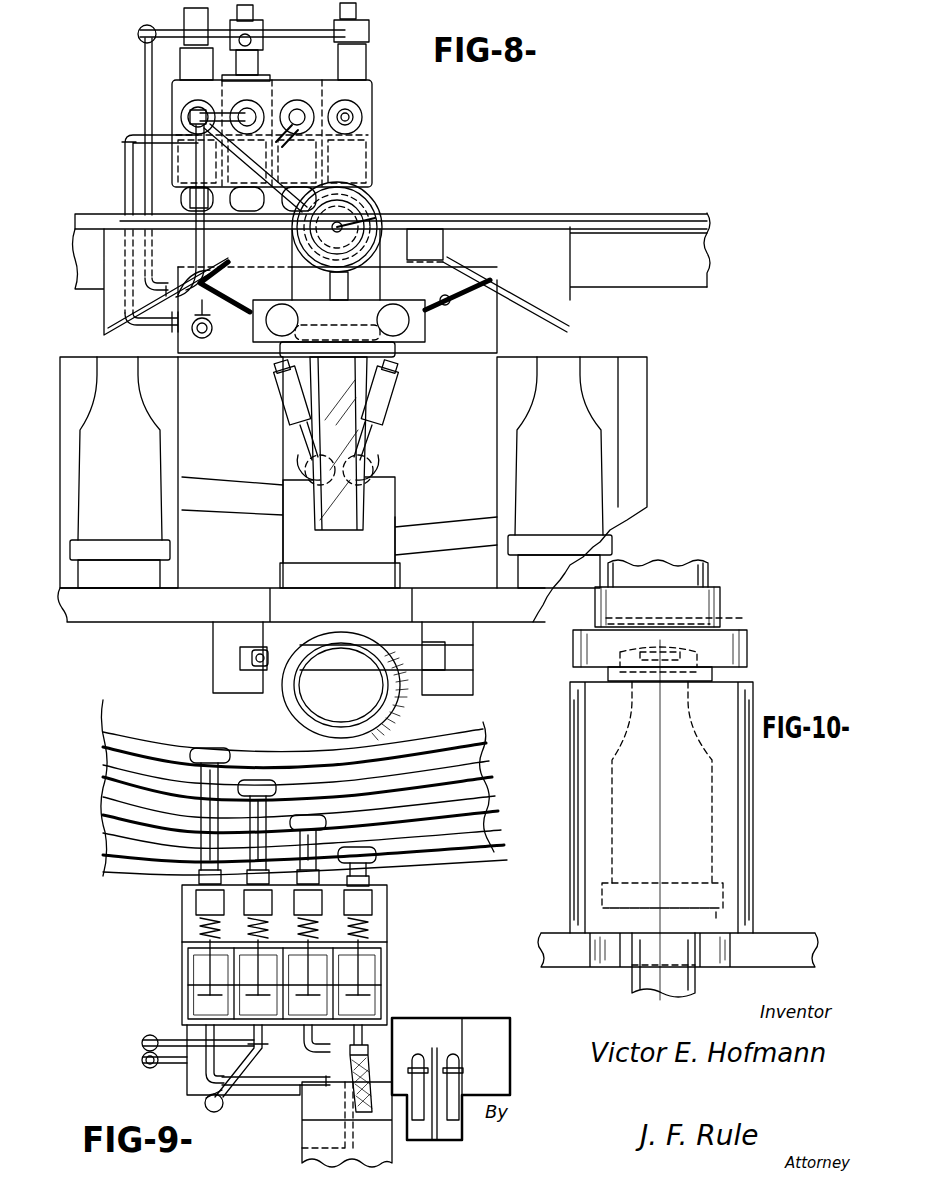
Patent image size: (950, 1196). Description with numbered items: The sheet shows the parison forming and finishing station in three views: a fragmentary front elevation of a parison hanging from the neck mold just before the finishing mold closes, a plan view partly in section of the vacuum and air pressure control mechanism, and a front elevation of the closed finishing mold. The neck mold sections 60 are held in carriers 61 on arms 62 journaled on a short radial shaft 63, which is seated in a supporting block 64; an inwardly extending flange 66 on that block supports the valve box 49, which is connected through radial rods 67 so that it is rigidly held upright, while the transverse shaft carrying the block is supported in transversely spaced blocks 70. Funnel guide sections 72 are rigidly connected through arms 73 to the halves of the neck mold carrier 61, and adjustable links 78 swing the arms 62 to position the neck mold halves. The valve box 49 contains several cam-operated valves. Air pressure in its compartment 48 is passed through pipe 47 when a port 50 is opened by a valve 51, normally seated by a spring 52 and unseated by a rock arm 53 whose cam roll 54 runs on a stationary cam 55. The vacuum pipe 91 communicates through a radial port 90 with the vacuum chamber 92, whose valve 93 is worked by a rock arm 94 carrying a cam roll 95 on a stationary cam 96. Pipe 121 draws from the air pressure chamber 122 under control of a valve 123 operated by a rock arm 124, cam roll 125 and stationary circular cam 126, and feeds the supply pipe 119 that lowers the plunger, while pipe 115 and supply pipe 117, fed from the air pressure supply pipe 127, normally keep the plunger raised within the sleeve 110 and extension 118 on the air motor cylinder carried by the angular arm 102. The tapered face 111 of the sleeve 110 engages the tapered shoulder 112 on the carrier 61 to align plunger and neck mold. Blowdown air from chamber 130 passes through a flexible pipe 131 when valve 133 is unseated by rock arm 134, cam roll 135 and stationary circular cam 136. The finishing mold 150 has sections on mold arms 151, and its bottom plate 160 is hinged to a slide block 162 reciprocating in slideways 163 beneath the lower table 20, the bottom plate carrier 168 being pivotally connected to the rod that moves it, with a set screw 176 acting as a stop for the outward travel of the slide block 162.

In FIG. 8, the lower table 20 is at (130, 624).
In FIG. 10, the lower table 20 is at (790, 935).
In FIG. 8, the pipe 47 is at (214, 172).
In FIG. 9, the pipe 47 is at (222, 1108).
In FIG. 9, the air pressure compartment 48 is at (227, 1053).
In FIG. 8, the valve box 49 is at (374, 131).
In FIG. 9, the valve box 49 is at (396, 950).
In FIG. 9, the port 50 is at (284, 967).
In FIG. 9, the valve 51 is at (252, 993).
In FIG. 9, the spring 52 is at (300, 936).
In FIG. 9, the rock arm 53 is at (252, 845).
In FIG. 9, the cam roll 54 is at (263, 778).
In FIG. 9, the stationary cam 55 is at (292, 783).
In FIG. 10, the neck mold sections 60 is at (714, 675).
In FIG. 8, the neck mold carrier 61 is at (256, 336).
In FIG. 10, the neck mold carrier 61 is at (748, 650).
In FIG. 8, the arms 62 is at (290, 283).
In FIG. 8, the radial shaft 63 is at (382, 222).
In FIG. 8, the supporting block 64 is at (362, 207).
In FIG. 9, the supporting block 64 is at (300, 1077).
In FIG. 9, the flange 66 is at (392, 961).
In FIG. 8, the radial rods 67 is at (254, 20).
In FIG. 9, the blocks 70 is at (185, 1094).
In FIG. 8, the funnel guide sections 72 is at (112, 312).
In FIG. 8, the arms 73 is at (246, 308).
In FIG. 8, the links 78 is at (290, 442).
In FIG. 8, the radial port 90 is at (345, 222).
In FIG. 9, the radial port 90 is at (302, 1148).
In FIG. 8, the vacuum pipe 91 is at (276, 180).
In FIG. 9, the vacuum pipe 91 is at (292, 1088).
In FIG. 8, the vacuum chamber 92 is at (176, 99).
In FIG. 9, the vacuum chamber 92 is at (192, 1000).
In FIG. 8, the valve 93 is at (188, 117).
In FIG. 9, the valve 93 is at (186, 990).
In FIG. 8, the rock arm 94 is at (186, 198).
In FIG. 9, the rock arm 94 is at (200, 868).
In FIG. 8, the cam roll 95 is at (192, 232).
In FIG. 9, the cam roll 95 is at (202, 745).
In FIG. 8, the stationary cam 96 is at (102, 215).
In FIG. 9, the stationary cam 96 is at (152, 738).
In FIG. 9, the angular arm 102 is at (446, 1146).
In FIG. 10, the sleeve 110 is at (724, 606).
In FIG. 10, the tapered face 111 is at (693, 620).
In FIG. 10, the tapered shoulder 112 is at (644, 651).
In FIG. 9, the air pressure supply pipe 115 is at (412, 1112).
In FIG. 8, the supply pipe 117 is at (144, 170).
In FIG. 9, the supply pipe 117 is at (170, 1075).
In FIG. 10, the extension 118 is at (710, 580).
In FIG. 9, the air pressure supply pipe 119 is at (458, 1085).
In FIG. 8, the pipe 121 is at (124, 150).
In FIG. 9, the pipe 121 is at (182, 1040).
In FIG. 9, the air pressure chamber 122 is at (326, 1040).
In FIG. 9, the valve 123 is at (340, 1010).
In FIG. 9, the rock arm 124 is at (340, 842).
In FIG. 9, the cam roll 125 is at (324, 818).
In FIG. 9, the stationary circular cam 126 is at (470, 802).
In FIG. 8, the air pressure supply pipe 127 is at (360, 17).
In FIG. 9, the chamber 130 is at (382, 1003).
In FIG. 8, the flexible pipe 131 is at (354, 115).
In FIG. 9, the flexible pipe 131 is at (372, 1052).
In FIG. 9, the valve 133 is at (388, 986).
In FIG. 9, the rock arm 134 is at (372, 873).
In FIG. 9, the cam roll 135 is at (380, 856).
In FIG. 9, the stationary circular cam 136 is at (430, 843).
In FIG. 8, the finishing mold 150 is at (178, 411).
In FIG. 10, the finishing mold 150 is at (752, 820).
In FIG. 8, the mold arms 151 is at (260, 490).
In FIG. 8, the bottom plate 160 is at (400, 700).
In FIG. 10, the bottom plate 160 is at (726, 893).
In FIG. 8, the slide block 162 is at (450, 660).
In FIG. 8, the slideways 163 is at (470, 631).
In FIG. 10, the bottom plate carrier 168 is at (696, 985).
In FIG. 8, the set screw 176 is at (250, 658).